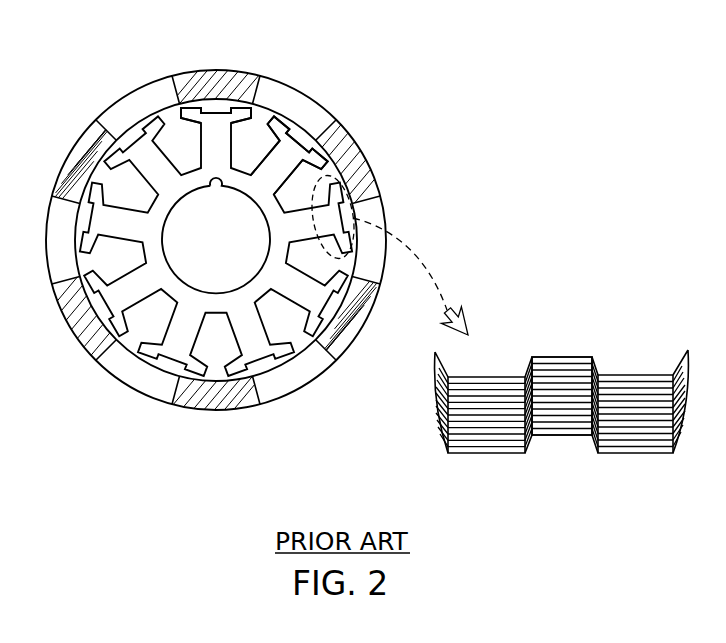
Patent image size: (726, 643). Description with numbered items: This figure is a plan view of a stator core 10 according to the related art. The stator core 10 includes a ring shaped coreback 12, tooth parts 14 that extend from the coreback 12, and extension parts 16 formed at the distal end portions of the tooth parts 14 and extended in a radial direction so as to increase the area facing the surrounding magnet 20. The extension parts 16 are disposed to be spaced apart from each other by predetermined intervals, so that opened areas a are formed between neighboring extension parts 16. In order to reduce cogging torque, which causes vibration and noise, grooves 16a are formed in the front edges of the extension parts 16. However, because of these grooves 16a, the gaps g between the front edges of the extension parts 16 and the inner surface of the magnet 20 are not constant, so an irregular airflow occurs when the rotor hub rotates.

The stator core 10 is at (383, 259).
The coreback 12 is at (293, 186).
The tooth parts 14 is at (268, 155).
The extension parts 16 is at (246, 109).
The grooves 16a is at (229, 110).
The magnet 20 is at (320, 366).
The opened areas a is at (161, 124).
The gaps g is at (130, 253).